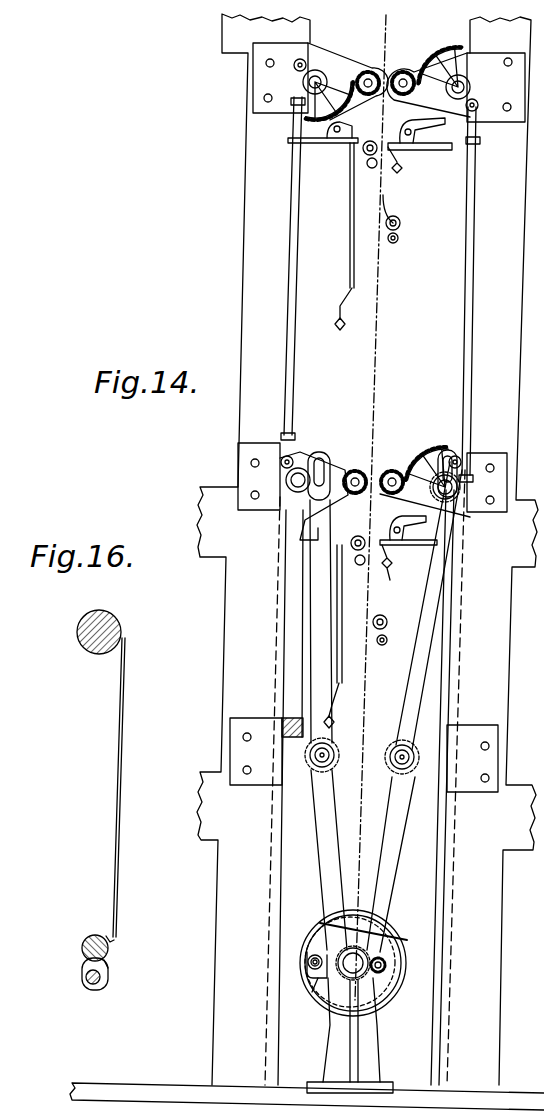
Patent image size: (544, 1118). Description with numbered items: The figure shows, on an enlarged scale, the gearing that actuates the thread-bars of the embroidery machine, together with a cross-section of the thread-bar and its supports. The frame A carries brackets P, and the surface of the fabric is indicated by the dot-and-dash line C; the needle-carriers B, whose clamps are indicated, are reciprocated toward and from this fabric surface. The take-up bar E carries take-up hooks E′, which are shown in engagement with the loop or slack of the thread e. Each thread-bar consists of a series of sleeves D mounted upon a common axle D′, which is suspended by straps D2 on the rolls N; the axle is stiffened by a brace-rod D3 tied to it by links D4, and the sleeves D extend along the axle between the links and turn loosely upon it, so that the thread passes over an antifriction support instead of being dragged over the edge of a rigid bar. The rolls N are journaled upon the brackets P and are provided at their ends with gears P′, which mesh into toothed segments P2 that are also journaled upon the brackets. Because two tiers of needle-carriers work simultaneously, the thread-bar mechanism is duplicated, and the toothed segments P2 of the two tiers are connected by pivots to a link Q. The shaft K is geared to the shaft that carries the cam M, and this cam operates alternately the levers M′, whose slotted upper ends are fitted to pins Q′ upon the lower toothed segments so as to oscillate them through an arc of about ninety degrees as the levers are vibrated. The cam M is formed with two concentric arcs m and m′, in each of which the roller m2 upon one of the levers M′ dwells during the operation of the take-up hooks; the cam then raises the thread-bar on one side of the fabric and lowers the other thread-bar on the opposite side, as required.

In FIG. 14, the frame A is at (244, 176).
In FIG. 14, the bracket P is at (253, 90).
In FIG. 14, the toothed segment P2 is at (362, 470).
In FIG. 14, the gear P′ is at (404, 70).
In FIG. 14, the link Q is at (289, 337).
In FIG. 14, the pin Q′ is at (325, 456).
In FIG. 14, the needle-carrier B is at (335, 143).
In FIG. 14, the thread e is at (350, 222).
In FIG. 14, the take-up bar E is at (400, 176).
In FIG. 14, the take-up hook E′ is at (349, 296).
In FIG. 14, the thread-bar sleeve D is at (401, 225).
In FIG. 16, the thread-bar sleeve D is at (81, 953).
In FIG. 14, the brace-rod D3 is at (386, 645).
In FIG. 16, the brace-rod D3 is at (84, 982).
In FIG. 14, the fabric surface line C is at (378, 300).
In FIG. 14, the lever M′ is at (303, 659).
In FIG. 14, the shaft K is at (353, 962).
In FIG. 14, the cam M is at (395, 998).
In FIG. 14, the roller m2 is at (308, 951).
In FIG. 14, the concentric arc m′ is at (385, 952).
In FIG. 14, the concentric arc m is at (312, 992).
In FIG. 16, the roll N is at (80, 642).
In FIG. 16, the strap D2 is at (117, 806).
In FIG. 16, the axle D′ is at (92, 936).
In FIG. 16, the link D4 is at (108, 966).